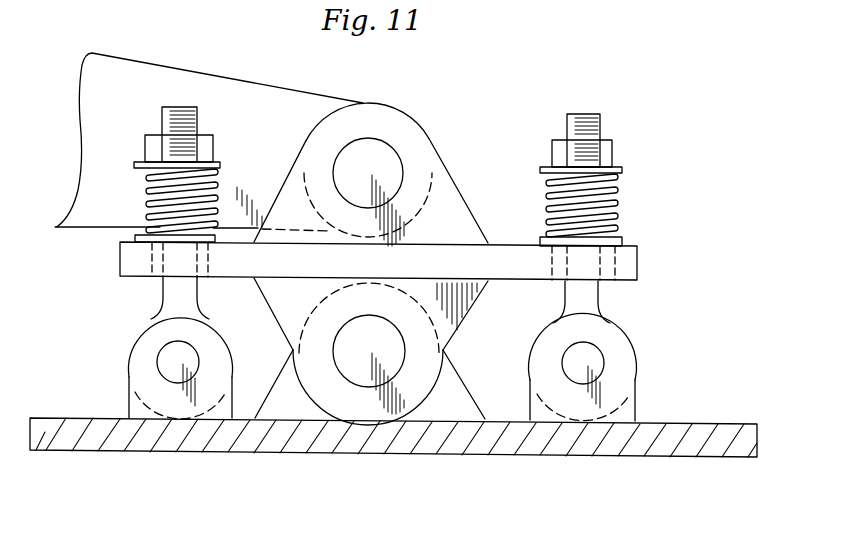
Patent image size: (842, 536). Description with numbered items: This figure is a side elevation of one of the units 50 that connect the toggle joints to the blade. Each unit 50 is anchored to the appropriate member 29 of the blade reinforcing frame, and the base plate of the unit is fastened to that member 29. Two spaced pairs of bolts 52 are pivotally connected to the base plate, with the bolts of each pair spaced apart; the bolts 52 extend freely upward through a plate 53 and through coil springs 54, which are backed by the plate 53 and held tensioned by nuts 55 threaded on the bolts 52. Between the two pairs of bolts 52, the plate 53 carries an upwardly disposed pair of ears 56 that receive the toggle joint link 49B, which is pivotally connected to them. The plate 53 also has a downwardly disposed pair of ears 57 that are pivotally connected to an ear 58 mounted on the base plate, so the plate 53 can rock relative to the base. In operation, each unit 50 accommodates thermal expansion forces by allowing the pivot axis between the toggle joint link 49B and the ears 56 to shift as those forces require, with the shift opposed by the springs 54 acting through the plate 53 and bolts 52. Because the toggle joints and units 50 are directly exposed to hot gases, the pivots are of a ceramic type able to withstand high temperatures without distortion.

The member of the blade reinforcing frame 29 is at (473, 452).
The toggle joint link 49B is at (243, 90).
The unit 50 is at (380, 278).
The bolts 52 is at (165, 288).
The plate 53 is at (640, 262).
The coil springs 54 is at (148, 202).
The nuts 55 is at (212, 140).
The upwardly disposed pair of ears 56 is at (455, 188).
The downwardly disposed pair of ears 57 is at (453, 332).
The ear 58 is at (292, 390).